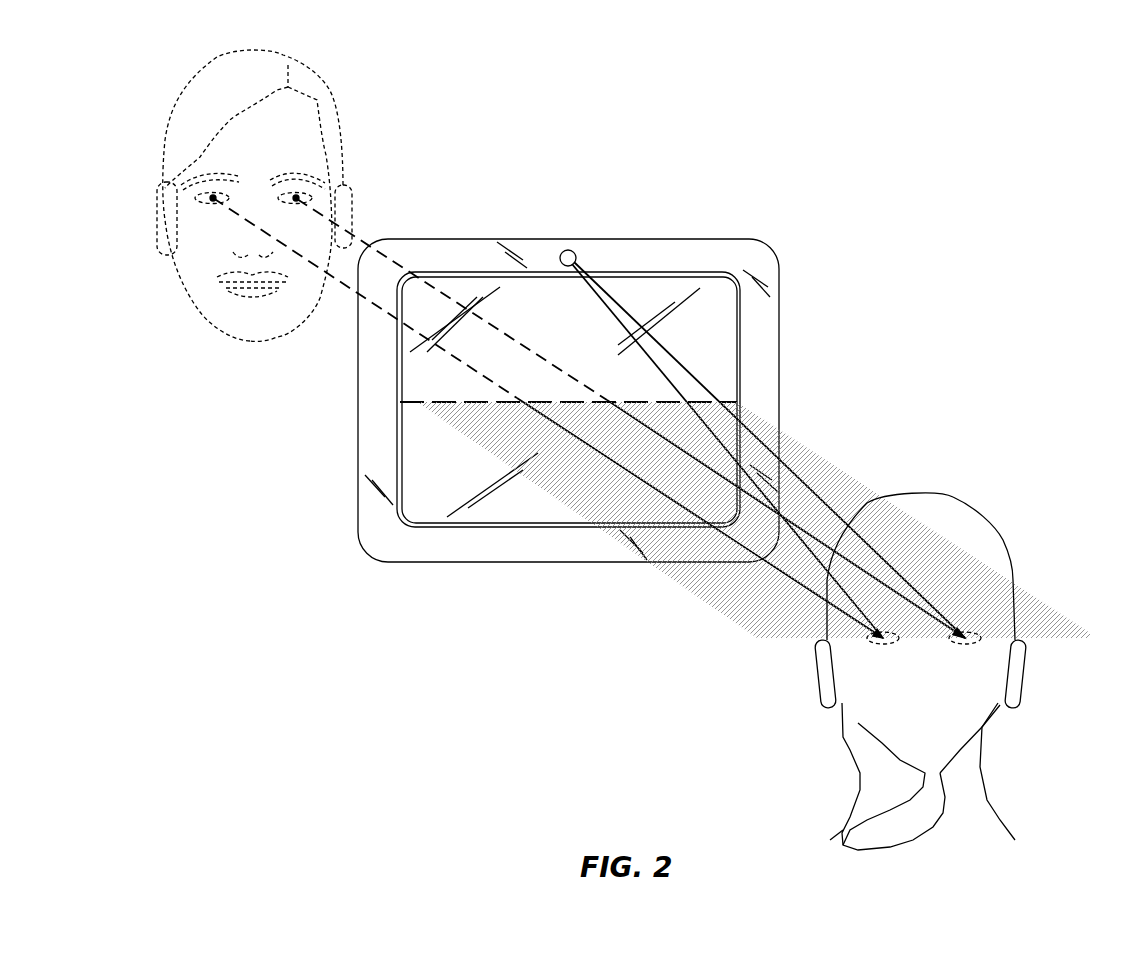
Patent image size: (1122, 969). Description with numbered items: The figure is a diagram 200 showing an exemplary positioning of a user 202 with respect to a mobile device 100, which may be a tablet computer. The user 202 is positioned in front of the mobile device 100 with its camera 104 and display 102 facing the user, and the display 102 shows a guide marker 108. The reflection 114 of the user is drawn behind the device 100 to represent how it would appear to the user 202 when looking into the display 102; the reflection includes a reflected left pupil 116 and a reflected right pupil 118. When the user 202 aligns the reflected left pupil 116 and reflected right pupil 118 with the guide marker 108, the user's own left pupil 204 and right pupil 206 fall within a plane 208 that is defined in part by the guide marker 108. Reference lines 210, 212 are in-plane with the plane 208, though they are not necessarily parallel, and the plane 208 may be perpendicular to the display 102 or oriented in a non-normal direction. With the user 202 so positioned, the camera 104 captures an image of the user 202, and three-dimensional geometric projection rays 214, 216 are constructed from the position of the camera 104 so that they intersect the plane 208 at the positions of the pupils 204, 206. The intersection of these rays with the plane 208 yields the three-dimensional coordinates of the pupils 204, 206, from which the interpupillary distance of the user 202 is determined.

The mobile device 100 is at (651, 420).
The display 102 is at (717, 287).
The camera 104 is at (570, 250).
The guide marker 108 is at (416, 402).
The reflection 114 is at (323, 93).
The reflected left pupil 116 is at (212, 200).
The reflected right pupil 118 is at (295, 198).
The diagram 200 is at (245, 191).
The user 202 is at (900, 671).
The left pupil 204 is at (880, 638).
The right pupil 206 is at (968, 637).
The plane 208 is at (670, 572).
The reference line 210 is at (352, 284).
The reference line 212 is at (357, 240).
The projection ray 214 is at (687, 392).
The projection ray 216 is at (680, 357).